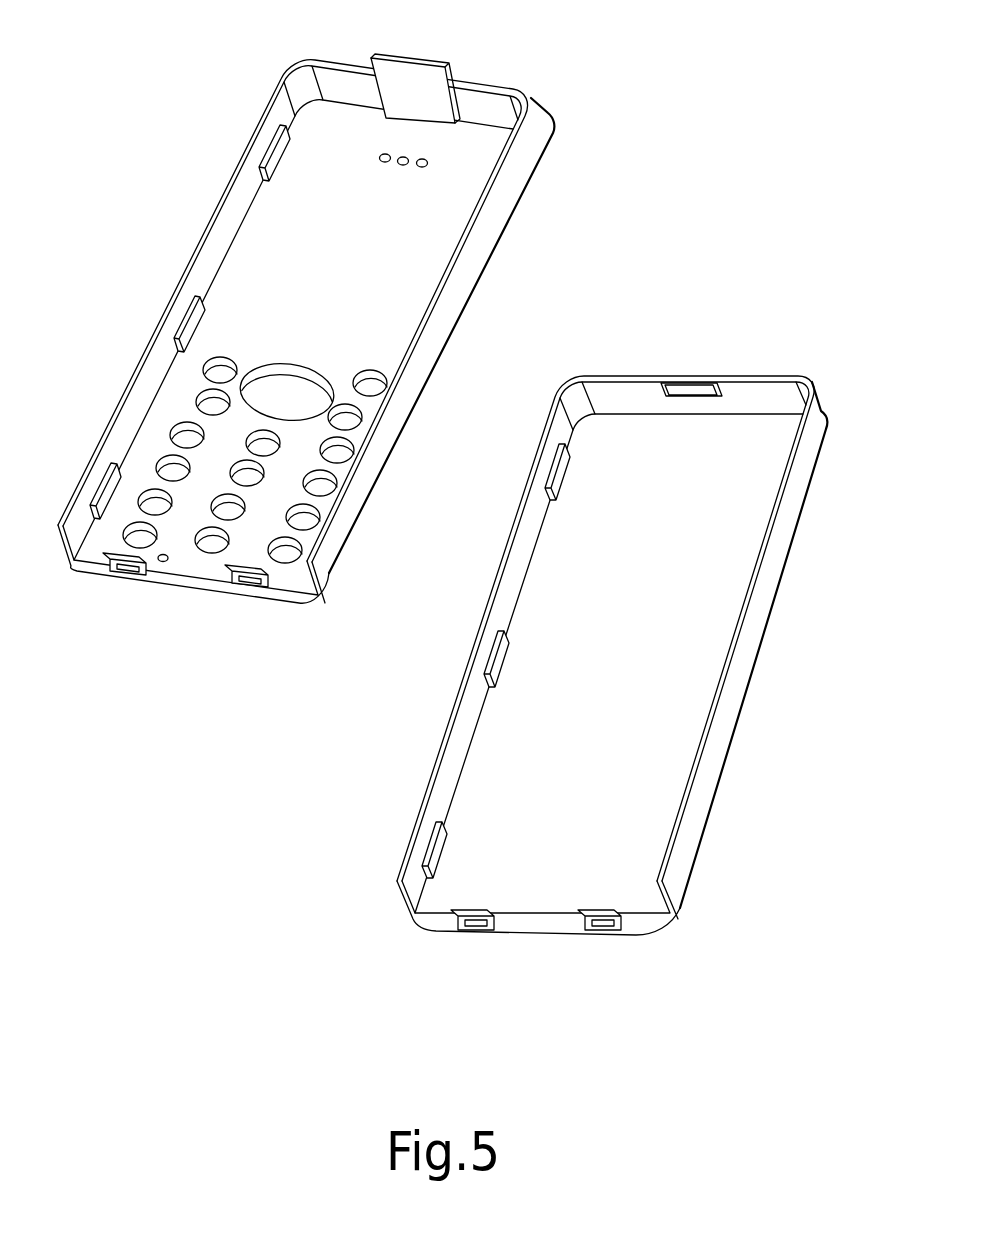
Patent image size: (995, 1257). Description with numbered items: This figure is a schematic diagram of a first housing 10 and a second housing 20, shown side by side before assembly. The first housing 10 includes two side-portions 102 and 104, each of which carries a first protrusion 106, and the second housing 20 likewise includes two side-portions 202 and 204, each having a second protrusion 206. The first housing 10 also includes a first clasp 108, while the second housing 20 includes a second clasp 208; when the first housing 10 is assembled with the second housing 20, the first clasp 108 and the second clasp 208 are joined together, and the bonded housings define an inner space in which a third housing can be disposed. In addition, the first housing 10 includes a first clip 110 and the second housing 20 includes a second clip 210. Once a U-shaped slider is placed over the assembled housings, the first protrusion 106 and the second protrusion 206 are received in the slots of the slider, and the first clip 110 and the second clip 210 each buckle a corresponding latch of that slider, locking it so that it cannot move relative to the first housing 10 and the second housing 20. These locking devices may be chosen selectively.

The first housing 10 is at (285, 325).
The side-portion 102 is at (135, 386).
The side-portion 104 is at (425, 362).
The first protrusion 106 is at (267, 154).
The first clasp 108 is at (414, 57).
The first clip 110 is at (128, 578).
The second housing 20 is at (622, 642).
The side-portion 202 is at (450, 747).
The side-portion 204 is at (785, 722).
The second protrusion 206 is at (553, 474).
The second clasp 208 is at (695, 380).
The second clip 210 is at (472, 924).